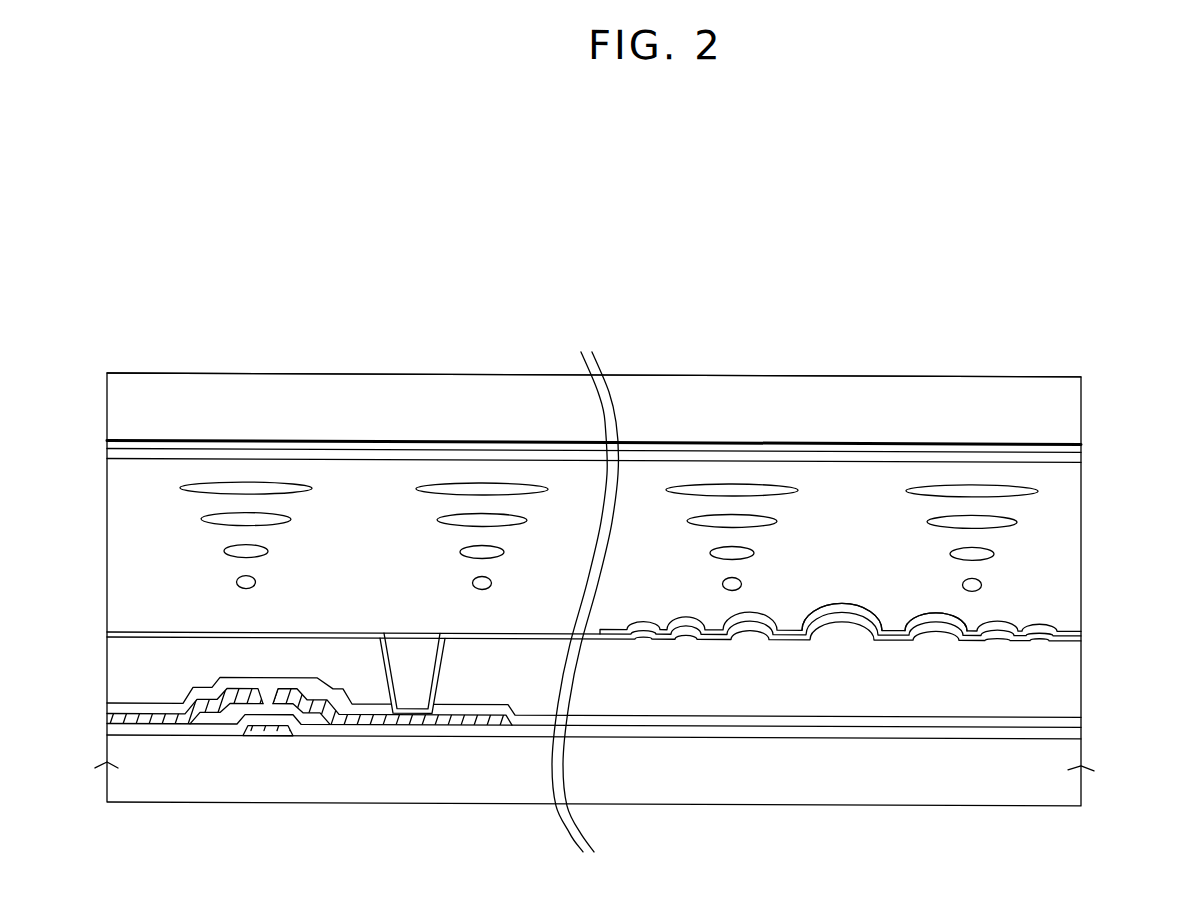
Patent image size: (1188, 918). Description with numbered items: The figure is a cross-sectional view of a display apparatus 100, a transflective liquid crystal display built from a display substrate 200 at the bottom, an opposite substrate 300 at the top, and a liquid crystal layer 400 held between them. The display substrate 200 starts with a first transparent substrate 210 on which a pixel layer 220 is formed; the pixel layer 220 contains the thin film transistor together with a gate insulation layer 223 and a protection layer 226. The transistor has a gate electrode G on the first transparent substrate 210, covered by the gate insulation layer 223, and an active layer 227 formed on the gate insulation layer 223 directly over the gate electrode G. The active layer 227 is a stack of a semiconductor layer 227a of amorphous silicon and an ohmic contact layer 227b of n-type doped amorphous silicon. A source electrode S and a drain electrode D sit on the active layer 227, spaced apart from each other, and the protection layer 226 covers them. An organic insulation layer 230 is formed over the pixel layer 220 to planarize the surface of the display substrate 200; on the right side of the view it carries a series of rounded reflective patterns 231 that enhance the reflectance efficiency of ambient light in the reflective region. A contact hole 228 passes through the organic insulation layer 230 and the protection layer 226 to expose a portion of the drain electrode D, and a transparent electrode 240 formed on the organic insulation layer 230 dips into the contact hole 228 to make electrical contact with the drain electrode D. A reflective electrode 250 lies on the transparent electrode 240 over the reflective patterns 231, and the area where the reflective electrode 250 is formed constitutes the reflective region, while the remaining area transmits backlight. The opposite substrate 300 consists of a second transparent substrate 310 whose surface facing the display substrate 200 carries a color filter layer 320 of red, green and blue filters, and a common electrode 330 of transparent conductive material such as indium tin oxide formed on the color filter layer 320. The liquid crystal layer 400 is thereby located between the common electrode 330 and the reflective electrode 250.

The display apparatus 100 is at (636, 293).
The display substrate 200 is at (1097, 591).
The first transparent substrate 210 is at (1025, 758).
The pixel layer 220 is at (294, 781).
The gate insulation layer 223 is at (770, 729).
The protection layer 226 is at (840, 718).
The active layer 227 is at (299, 791).
The semiconductor layer 227a is at (302, 722).
The ohmic contact layer 227b is at (317, 713).
The contact hole 228 is at (405, 623).
The organic insulation layer 230 is at (893, 698).
The reflective patterns 231 is at (932, 634).
The transparent electrode 240 is at (617, 637).
The reflective electrode 250 is at (685, 616).
The opposite substrate 300 is at (1097, 371).
The second transparent substrate 310 is at (880, 389).
The color filter layer 320 is at (948, 445).
The common electrode 330 is at (1016, 457).
The liquid crystal layer 400 is at (1097, 458).
The source electrode S is at (177, 714).
The gate electrode G is at (257, 728).
The drain electrode D is at (448, 720).